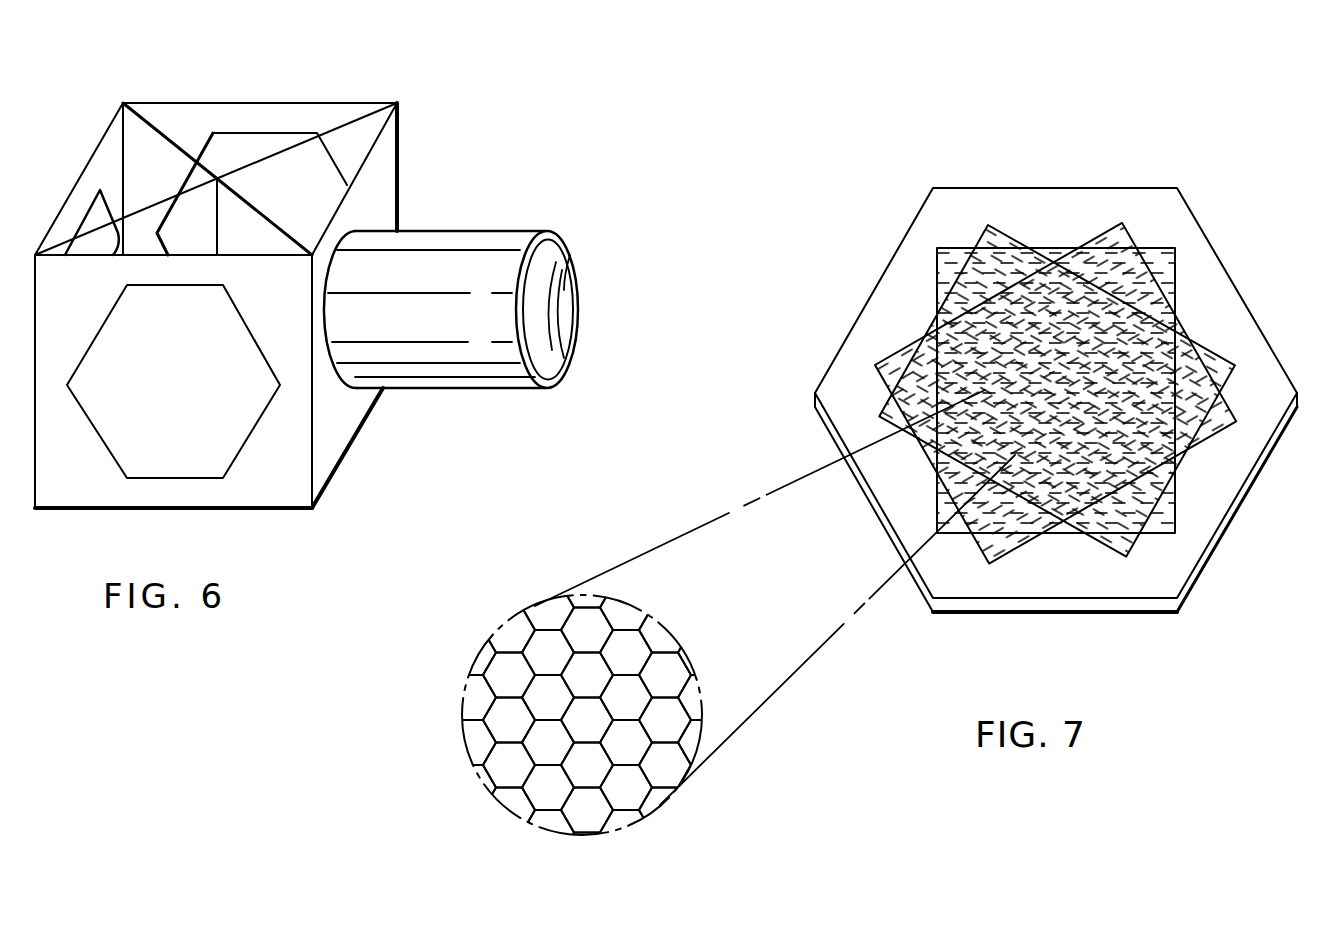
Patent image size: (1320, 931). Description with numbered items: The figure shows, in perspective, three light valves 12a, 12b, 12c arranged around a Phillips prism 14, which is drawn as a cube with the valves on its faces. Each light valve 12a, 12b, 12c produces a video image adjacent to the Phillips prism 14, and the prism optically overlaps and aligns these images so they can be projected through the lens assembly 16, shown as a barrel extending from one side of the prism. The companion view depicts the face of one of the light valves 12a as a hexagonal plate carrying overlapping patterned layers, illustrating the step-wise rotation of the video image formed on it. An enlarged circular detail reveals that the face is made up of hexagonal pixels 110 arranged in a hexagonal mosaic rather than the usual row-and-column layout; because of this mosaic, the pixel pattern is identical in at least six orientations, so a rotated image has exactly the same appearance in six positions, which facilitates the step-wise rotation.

In FIG. 6, the light valve 12a is at (153, 478).
In FIG. 7, the light valve 12a is at (1208, 567).
In FIG. 6, the light valve 12b is at (85, 208).
In FIG. 6, the light valve 12c is at (277, 133).
In FIG. 6, the Phillips prism 14 is at (383, 145).
In FIG. 6, the lens assembly 16 is at (478, 230).
In FIG. 7, the hexagonal pixels 110 is at (580, 848).